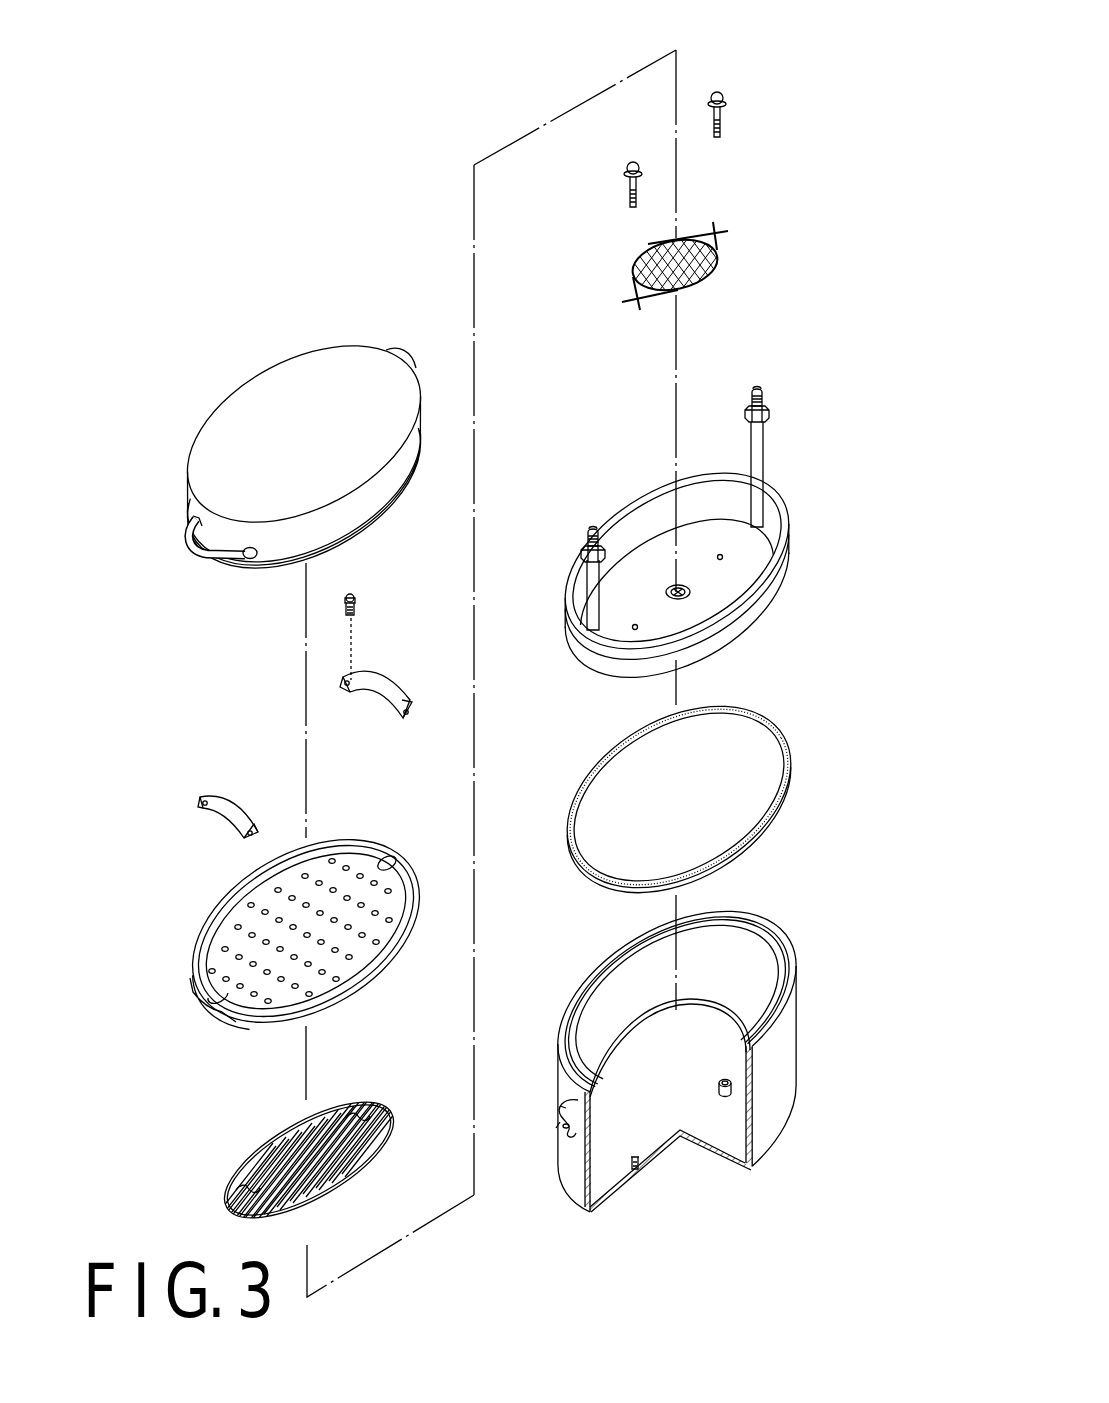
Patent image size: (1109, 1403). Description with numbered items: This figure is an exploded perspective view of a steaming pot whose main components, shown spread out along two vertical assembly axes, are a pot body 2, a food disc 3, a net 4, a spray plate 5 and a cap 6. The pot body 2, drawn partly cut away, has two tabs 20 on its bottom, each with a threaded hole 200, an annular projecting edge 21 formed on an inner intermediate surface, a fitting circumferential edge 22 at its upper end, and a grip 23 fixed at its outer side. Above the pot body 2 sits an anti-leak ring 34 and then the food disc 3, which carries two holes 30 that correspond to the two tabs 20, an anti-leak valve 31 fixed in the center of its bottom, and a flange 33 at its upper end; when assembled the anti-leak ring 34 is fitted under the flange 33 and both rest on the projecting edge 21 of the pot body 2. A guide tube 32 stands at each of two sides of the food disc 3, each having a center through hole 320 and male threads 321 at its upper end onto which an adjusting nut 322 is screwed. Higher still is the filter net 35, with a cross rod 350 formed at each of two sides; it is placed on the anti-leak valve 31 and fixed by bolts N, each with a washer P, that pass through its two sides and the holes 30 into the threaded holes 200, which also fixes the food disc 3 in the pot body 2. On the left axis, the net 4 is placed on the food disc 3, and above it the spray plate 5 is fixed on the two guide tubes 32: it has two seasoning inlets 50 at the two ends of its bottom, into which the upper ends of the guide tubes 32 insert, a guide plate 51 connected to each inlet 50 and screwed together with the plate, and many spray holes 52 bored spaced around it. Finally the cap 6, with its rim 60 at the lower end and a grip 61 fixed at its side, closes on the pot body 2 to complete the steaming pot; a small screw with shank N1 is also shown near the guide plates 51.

The pot body 2 is at (812, 1027).
The tab 20 is at (725, 1097).
The threaded hole 200 is at (640, 1165).
The annular projecting edge 21 is at (612, 1062).
The fitting circumferential edge 22 is at (763, 926).
The grip 23 is at (562, 1132).
The food disc 3 is at (818, 580).
The hole 30 is at (722, 559).
The anti-leak valve 31 is at (690, 594).
The guide tube 32 is at (760, 470).
The center through hole 320 is at (757, 388).
The male threads 321 is at (770, 408).
The adjusting nut 322 is at (770, 420).
The flange 33 is at (612, 645).
The anti-leak ring 34 is at (786, 790).
The filter net 35 is at (723, 268).
The cross rod 350 is at (730, 232).
The net 4 is at (360, 1176).
The spray plate 5 is at (362, 982).
The seasoning inlet 50 is at (388, 858).
The guide plate 51 is at (382, 683).
The spray hole 52 is at (333, 858).
The cap 6 is at (205, 410).
The lid rim 60 is at (263, 572).
The grip 61 is at (195, 545).
The bolt N is at (355, 594).
The screw shaft N1 is at (722, 132).
The washer P is at (730, 98).